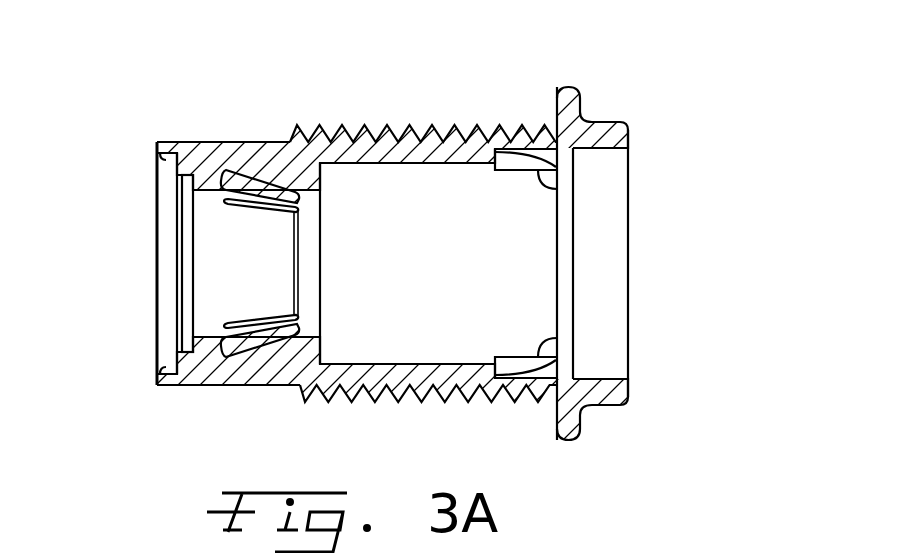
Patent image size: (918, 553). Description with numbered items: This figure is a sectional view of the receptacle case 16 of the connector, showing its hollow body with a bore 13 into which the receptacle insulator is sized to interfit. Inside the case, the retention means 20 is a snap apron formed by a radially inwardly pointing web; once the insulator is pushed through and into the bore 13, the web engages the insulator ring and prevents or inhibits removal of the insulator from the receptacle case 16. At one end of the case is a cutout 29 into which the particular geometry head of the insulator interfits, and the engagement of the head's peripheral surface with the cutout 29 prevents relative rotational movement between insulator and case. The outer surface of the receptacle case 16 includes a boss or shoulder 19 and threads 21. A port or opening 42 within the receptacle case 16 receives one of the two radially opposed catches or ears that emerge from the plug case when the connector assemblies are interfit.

The receptacle case 16 is at (676, 93).
The bore 13 is at (367, 160).
The boss or shoulder 19 is at (566, 87).
The retention means 20 is at (268, 191).
The threads 21 is at (418, 130).
The cutout 29 is at (162, 160).
The port or opening 42 is at (552, 188).